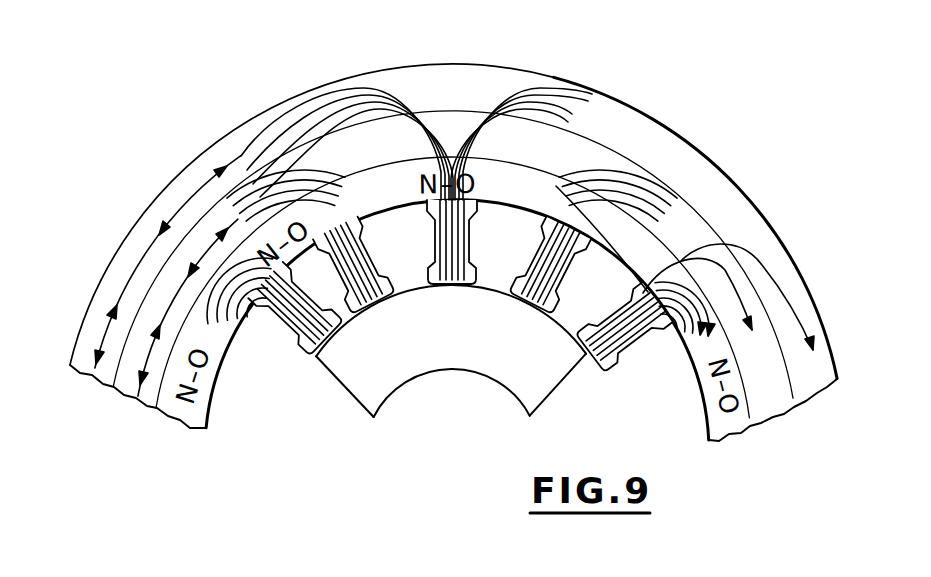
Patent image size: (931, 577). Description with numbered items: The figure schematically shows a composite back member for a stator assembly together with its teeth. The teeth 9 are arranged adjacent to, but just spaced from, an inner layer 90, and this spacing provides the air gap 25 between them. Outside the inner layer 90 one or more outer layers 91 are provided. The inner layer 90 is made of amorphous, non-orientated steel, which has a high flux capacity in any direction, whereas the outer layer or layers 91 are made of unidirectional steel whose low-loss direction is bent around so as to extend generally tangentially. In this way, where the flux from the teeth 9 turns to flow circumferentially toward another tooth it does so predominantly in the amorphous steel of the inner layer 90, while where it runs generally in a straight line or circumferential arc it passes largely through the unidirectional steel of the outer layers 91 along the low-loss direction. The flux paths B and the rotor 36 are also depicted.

The outer layer 91 is at (85, 380).
The inner layer 90 is at (183, 428).
The rotor 36 is at (483, 322).
The air gap 25 is at (322, 243).
The teeth 9 is at (309, 374).
The magnetic flux lines B is at (542, 107).